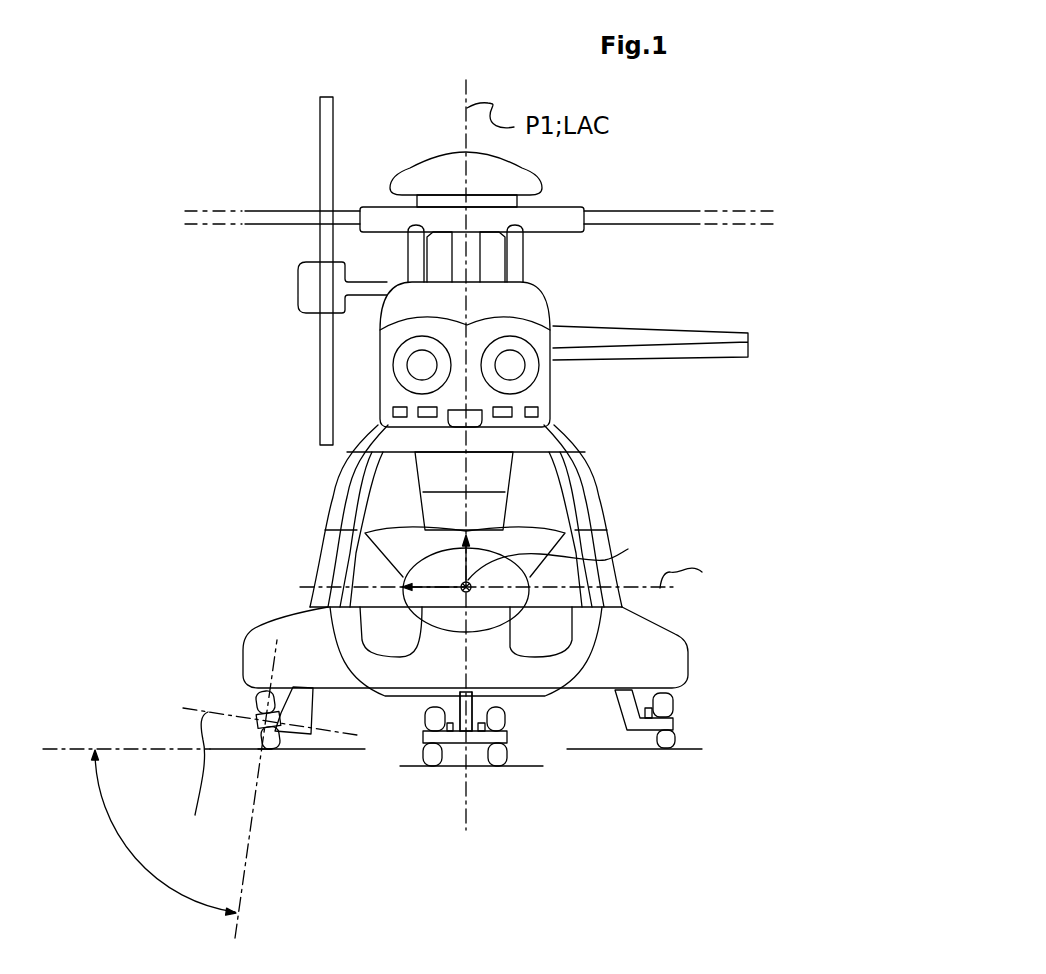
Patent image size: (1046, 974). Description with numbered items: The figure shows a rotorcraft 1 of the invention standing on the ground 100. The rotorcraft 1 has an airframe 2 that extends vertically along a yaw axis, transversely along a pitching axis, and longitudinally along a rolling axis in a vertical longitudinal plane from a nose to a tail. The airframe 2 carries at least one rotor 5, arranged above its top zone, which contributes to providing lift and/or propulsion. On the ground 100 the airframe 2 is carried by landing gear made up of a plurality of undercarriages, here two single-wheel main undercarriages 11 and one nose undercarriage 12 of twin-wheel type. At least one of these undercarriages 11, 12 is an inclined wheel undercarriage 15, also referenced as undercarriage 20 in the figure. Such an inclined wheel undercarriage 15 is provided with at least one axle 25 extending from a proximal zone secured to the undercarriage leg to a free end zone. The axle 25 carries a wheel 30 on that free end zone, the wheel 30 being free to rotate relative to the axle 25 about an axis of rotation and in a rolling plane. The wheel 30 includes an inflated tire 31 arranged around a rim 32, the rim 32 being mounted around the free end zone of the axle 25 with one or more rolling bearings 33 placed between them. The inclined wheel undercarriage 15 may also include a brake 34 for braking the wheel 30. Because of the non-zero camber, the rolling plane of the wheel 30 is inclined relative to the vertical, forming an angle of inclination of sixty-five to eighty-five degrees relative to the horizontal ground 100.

The rotorcraft 1 is at (672, 431).
The airframe 2 is at (283, 628).
The rotor 5 is at (247, 760).
The main undercarriage 11 is at (277, 763).
The nose undercarriage 12 is at (504, 779).
The inclined wheel undercarriage 15 is at (386, 741).
The landing gear 20 is at (322, 708).
The axle 25 is at (312, 739).
The wheel 30 is at (252, 700).
The tire 31 is at (274, 703).
The rim 32 is at (247, 707).
The rolling bearing 33 is at (284, 750).
The brake 34 is at (278, 704).
The ground 100 is at (292, 732).